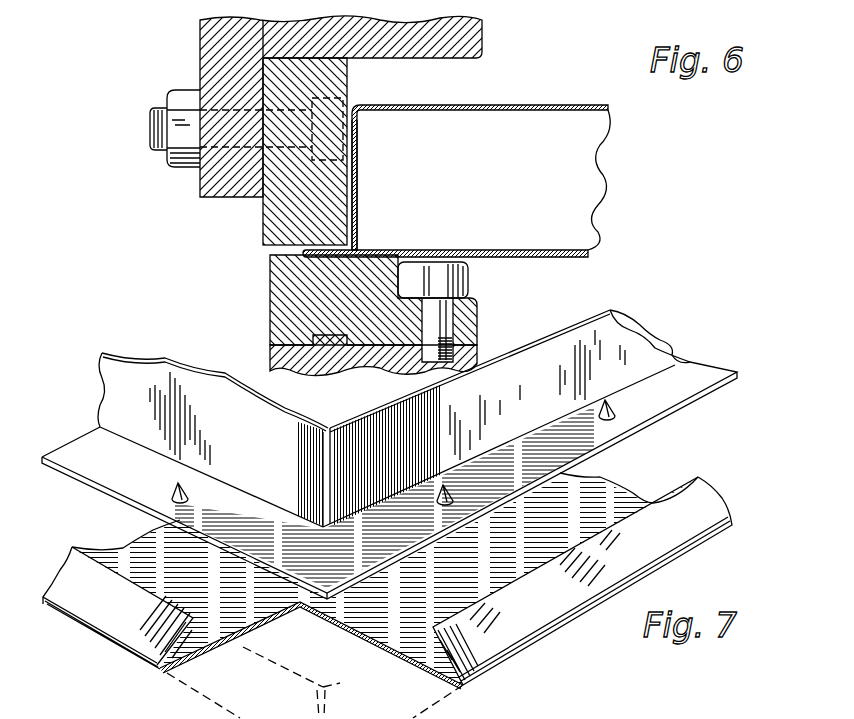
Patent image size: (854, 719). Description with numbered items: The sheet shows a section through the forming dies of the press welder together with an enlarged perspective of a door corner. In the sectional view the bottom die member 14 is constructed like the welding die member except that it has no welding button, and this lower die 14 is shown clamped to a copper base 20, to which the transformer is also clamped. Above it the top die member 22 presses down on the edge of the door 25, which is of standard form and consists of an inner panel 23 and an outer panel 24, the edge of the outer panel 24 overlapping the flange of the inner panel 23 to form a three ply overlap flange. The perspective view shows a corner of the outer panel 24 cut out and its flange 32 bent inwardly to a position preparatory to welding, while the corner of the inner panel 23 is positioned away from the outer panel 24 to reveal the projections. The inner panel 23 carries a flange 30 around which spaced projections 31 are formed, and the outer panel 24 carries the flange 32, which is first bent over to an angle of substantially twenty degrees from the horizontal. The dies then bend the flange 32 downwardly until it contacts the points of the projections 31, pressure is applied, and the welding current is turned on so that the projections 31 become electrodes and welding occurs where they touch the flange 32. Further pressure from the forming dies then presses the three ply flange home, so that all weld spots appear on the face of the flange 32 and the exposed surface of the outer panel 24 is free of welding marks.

In FIG. 6, the lower die 14 is at (268, 287).
In FIG. 6, the copper base 20 is at (270, 358).
In FIG. 6, the top die member 22 is at (262, 224).
In FIG. 6, the inner panel 23 is at (432, 110).
In FIG. 7, the inner panel 23 is at (618, 342).
In FIG. 6, the outer panel 24 is at (437, 250).
In FIG. 7, the outer panel 24 is at (385, 595).
In FIG. 6, the door 25 is at (364, 192).
In FIG. 7, the door 25 is at (133, 385).
In FIG. 7, the flange 30 is at (693, 373).
In FIG. 7, the projections 31 is at (617, 413).
In FIG. 7, the flange 32 is at (705, 507).